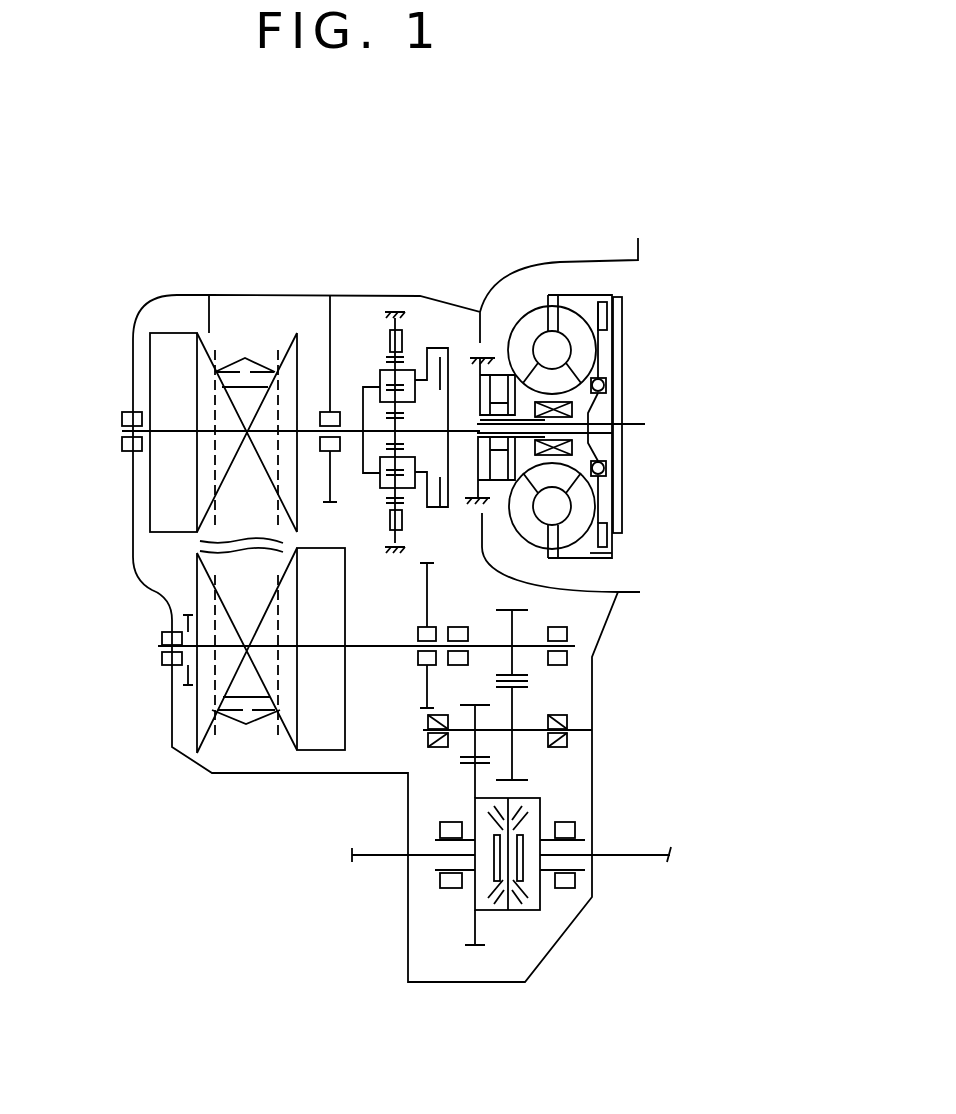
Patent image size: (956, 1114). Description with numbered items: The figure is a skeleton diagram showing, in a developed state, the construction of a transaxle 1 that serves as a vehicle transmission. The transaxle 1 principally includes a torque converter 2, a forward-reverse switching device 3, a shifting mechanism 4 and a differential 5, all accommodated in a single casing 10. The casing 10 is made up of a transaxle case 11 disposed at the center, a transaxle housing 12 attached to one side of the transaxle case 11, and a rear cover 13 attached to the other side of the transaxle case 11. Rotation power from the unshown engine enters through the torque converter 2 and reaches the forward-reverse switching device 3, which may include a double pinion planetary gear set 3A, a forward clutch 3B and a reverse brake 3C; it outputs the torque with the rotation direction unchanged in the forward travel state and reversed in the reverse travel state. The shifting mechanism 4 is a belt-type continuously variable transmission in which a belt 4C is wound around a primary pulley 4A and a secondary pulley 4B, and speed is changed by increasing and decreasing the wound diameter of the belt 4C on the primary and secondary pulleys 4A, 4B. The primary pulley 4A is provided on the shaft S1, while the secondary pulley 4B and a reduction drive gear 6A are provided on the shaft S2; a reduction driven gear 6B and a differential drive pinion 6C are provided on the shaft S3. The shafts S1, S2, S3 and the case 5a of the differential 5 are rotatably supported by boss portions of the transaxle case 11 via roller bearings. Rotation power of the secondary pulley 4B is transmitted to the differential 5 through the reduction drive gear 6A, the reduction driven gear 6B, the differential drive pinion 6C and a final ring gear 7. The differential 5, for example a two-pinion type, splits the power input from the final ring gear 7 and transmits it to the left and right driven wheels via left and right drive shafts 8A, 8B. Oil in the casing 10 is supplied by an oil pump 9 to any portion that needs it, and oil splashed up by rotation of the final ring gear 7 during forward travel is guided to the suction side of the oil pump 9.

The transaxle 1 is at (158, 263).
The torque converter 2 is at (568, 290).
The forward-reverse switching device 3 is at (488, 241).
The double pinion planetary gear set 3A is at (408, 362).
The forward clutch 3B is at (449, 336).
The reverse brake 3C is at (386, 338).
The shifting mechanism 4 is at (78, 573).
The primary pulley 4A is at (144, 521).
The secondary pulley 4B is at (193, 598).
The belt 4C is at (213, 533).
The differential 5 is at (546, 810).
The case 5a is at (473, 898).
The reduction drive gear 6A is at (513, 621).
The reduction driven gear 6B is at (513, 697).
The differential drive pinion 6C is at (470, 752).
The final ring gear 7 is at (473, 794).
The left drive shaft 8A is at (386, 858).
The right drive shaft 8B is at (620, 857).
The oil pump 9 is at (499, 363).
The casing 10 is at (432, 159).
The transaxle case 11 is at (351, 292).
The transaxle housing 12 is at (537, 263).
The rear cover 13 is at (197, 293).
The shaft S1 is at (171, 428).
The shaft S2 is at (362, 646).
The shaft S3 is at (527, 735).